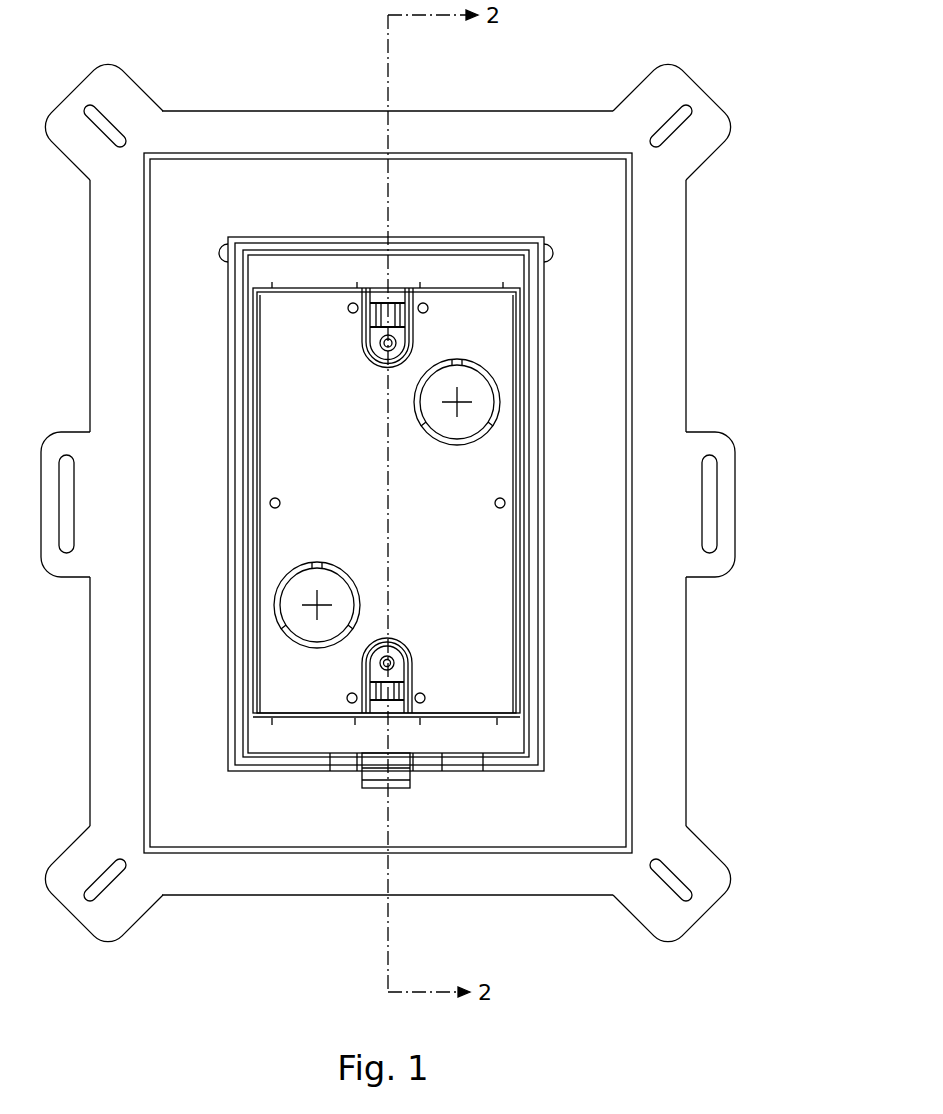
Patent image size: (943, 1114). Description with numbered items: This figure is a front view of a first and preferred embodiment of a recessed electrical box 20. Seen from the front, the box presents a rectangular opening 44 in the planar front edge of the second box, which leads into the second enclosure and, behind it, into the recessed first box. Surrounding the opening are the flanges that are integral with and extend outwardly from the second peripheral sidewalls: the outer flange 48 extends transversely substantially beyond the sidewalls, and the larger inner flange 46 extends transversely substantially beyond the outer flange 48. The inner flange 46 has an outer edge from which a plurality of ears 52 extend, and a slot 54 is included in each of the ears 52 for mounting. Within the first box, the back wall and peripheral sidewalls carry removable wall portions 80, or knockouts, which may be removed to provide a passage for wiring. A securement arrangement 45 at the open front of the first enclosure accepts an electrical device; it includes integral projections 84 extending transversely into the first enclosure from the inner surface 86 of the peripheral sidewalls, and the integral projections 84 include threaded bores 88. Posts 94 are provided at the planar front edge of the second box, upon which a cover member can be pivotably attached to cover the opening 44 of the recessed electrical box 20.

The recessed electrical box 20 is at (728, 332).
The opening 44 is at (477, 558).
The securement arrangement 45 is at (417, 330).
The inner flange 46 is at (651, 393).
The outer flange 48 is at (573, 364).
The ears 52 is at (732, 140).
The slot 54 is at (677, 122).
The removable wall portions 80 is at (438, 415).
The integral projections 84 is at (405, 663).
The inner surface 86 is at (458, 710).
The threaded bores 88 is at (367, 358).
The posts 94 is at (560, 260).